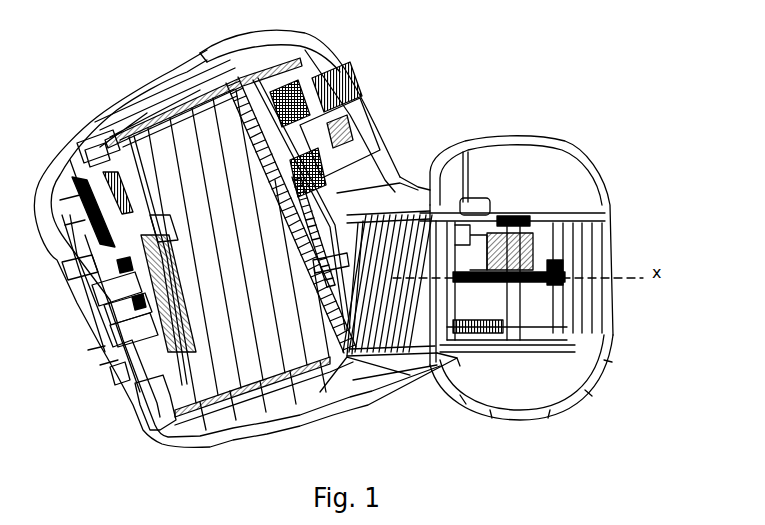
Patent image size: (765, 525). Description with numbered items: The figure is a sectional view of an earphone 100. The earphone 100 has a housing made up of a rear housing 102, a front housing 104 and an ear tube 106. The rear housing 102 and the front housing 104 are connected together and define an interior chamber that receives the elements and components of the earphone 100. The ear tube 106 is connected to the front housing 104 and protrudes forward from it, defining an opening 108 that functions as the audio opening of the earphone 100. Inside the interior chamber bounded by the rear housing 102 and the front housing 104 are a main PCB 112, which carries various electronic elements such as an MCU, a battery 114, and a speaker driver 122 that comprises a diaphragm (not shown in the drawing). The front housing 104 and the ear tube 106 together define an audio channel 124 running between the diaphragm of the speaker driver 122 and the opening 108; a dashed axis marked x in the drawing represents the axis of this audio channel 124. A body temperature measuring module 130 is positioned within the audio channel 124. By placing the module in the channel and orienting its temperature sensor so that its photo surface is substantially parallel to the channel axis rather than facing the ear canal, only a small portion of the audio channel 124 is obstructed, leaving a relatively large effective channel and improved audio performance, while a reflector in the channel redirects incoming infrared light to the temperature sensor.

The earphone 100 is at (450, 112).
The rear housing 102 is at (107, 125).
The front housing 104 is at (268, 50).
The ear tube 106 is at (470, 233).
The opening 108 is at (560, 276).
The main PCB 112 is at (167, 330).
The battery 114 is at (268, 367).
The speaker driver 122 is at (373, 333).
The audio channel 124 is at (485, 317).
The body temperature measuring module 130 is at (522, 207).